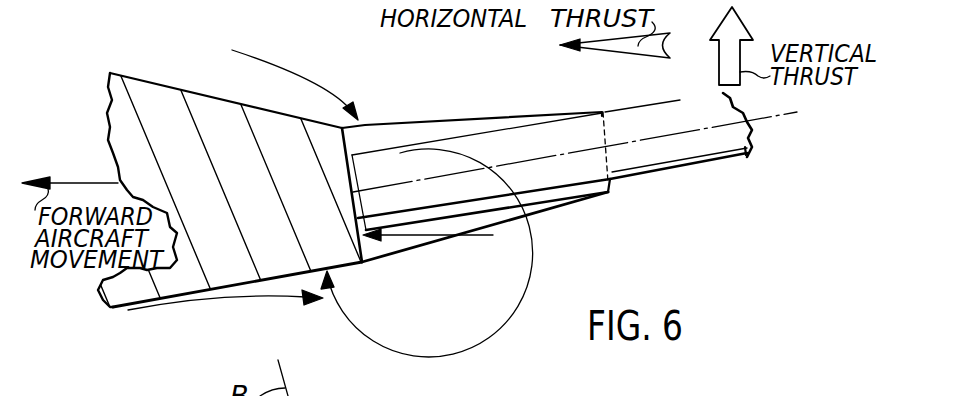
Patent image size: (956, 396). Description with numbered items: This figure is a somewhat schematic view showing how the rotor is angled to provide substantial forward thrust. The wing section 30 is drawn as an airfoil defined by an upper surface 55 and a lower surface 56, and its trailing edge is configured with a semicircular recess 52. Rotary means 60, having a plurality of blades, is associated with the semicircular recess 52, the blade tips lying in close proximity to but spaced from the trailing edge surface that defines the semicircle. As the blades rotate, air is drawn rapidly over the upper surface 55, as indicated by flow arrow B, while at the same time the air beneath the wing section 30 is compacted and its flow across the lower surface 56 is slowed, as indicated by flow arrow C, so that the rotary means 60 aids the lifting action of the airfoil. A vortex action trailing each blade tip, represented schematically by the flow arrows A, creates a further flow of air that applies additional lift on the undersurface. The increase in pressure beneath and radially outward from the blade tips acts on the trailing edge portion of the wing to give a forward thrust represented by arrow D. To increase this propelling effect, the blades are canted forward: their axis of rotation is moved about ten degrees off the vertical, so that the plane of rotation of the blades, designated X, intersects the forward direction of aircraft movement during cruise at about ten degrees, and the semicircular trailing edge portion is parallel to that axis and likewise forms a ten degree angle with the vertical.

The wing section 30 is at (110, 128).
The semicircular recess 52 is at (415, 133).
The upper surface 55 is at (163, 86).
The lower surface 56 is at (115, 312).
The rotary means 60 is at (681, 148).
The vortex flow arrows A is at (523, 293).
The upper surface flow arrow B is at (302, 72).
The lower surface flow arrow C is at (250, 296).
The forward thrust arrow D is at (425, 238).
The plane of rotation of the blades X is at (803, 123).